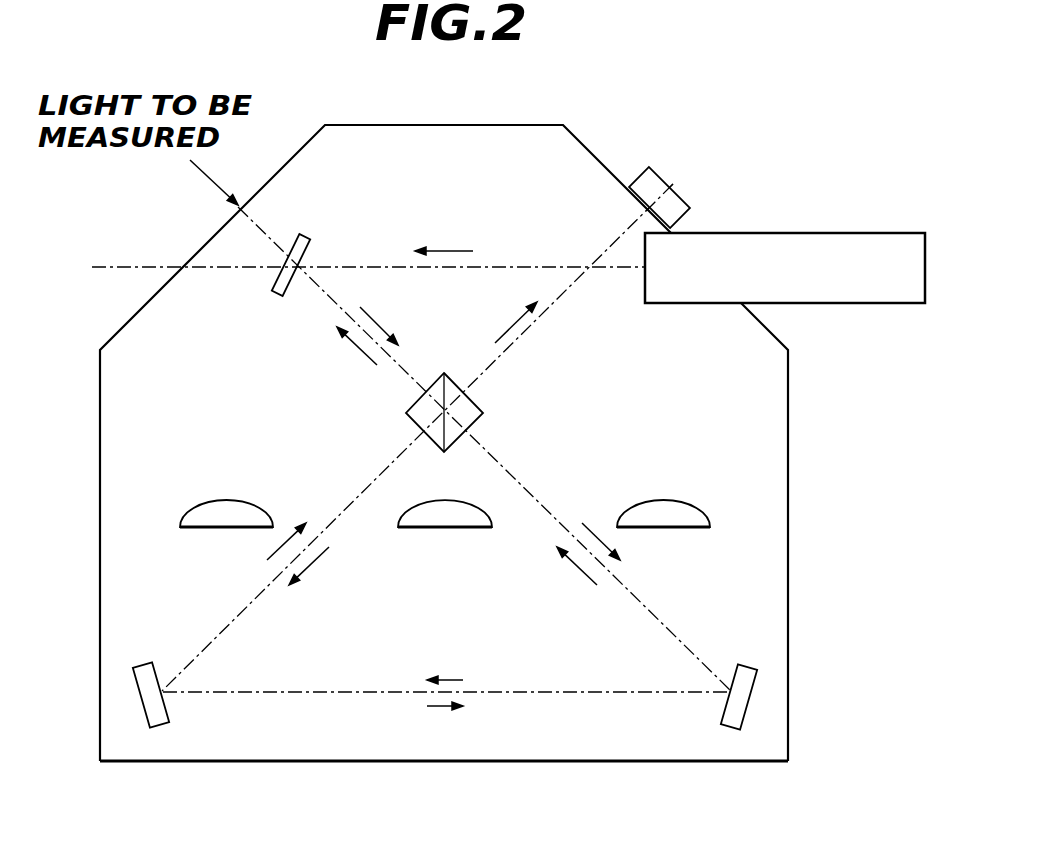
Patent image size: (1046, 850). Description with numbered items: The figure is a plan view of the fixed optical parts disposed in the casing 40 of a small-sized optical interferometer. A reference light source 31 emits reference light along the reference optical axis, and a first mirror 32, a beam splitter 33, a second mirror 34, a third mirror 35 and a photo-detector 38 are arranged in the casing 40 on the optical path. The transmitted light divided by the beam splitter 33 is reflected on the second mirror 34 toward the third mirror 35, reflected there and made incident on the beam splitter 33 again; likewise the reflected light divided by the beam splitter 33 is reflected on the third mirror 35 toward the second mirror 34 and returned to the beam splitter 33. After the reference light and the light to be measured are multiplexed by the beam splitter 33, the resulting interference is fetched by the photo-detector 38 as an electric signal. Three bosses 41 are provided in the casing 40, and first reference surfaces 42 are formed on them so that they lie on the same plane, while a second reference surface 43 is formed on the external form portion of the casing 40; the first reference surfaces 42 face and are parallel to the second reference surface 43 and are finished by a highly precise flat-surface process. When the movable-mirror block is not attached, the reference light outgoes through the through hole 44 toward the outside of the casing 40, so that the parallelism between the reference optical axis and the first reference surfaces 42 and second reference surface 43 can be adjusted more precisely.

The reference light source 31 is at (795, 232).
The first mirror 32 is at (305, 233).
The beam splitter 33 is at (406, 410).
The second mirror 34 is at (746, 665).
The third mirror 35 is at (140, 662).
The photo-detector 38 is at (660, 168).
The casing 40 is at (445, 124).
The boss 41 is at (226, 500).
The first reference surface 42 is at (226, 529).
The second reference surface 43 is at (436, 763).
The through hole 44 is at (180, 263).